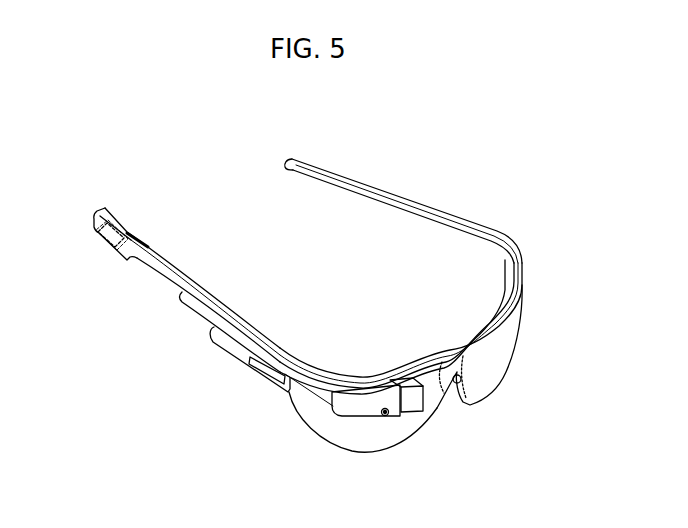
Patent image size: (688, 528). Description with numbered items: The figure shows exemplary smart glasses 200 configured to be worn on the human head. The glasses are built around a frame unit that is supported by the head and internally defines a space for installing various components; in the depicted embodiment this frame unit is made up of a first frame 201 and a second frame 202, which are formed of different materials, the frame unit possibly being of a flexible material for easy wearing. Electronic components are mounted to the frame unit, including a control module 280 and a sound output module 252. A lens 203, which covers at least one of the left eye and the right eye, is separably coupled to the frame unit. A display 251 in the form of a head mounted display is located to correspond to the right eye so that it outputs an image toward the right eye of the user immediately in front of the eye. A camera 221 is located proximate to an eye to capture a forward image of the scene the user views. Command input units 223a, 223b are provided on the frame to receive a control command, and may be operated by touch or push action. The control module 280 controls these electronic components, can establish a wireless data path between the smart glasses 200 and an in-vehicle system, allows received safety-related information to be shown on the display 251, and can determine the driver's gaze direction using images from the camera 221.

The smart glasses 200 is at (389, 151).
The first frame 201 is at (421, 200).
The second frame 202 is at (167, 264).
The lens 203 is at (500, 347).
The camera 221 is at (387, 416).
The command input unit 223a is at (139, 237).
The command input unit 223b is at (265, 377).
The display 251 is at (413, 397).
The sound output module 252 is at (103, 242).
The control module 280 is at (222, 345).